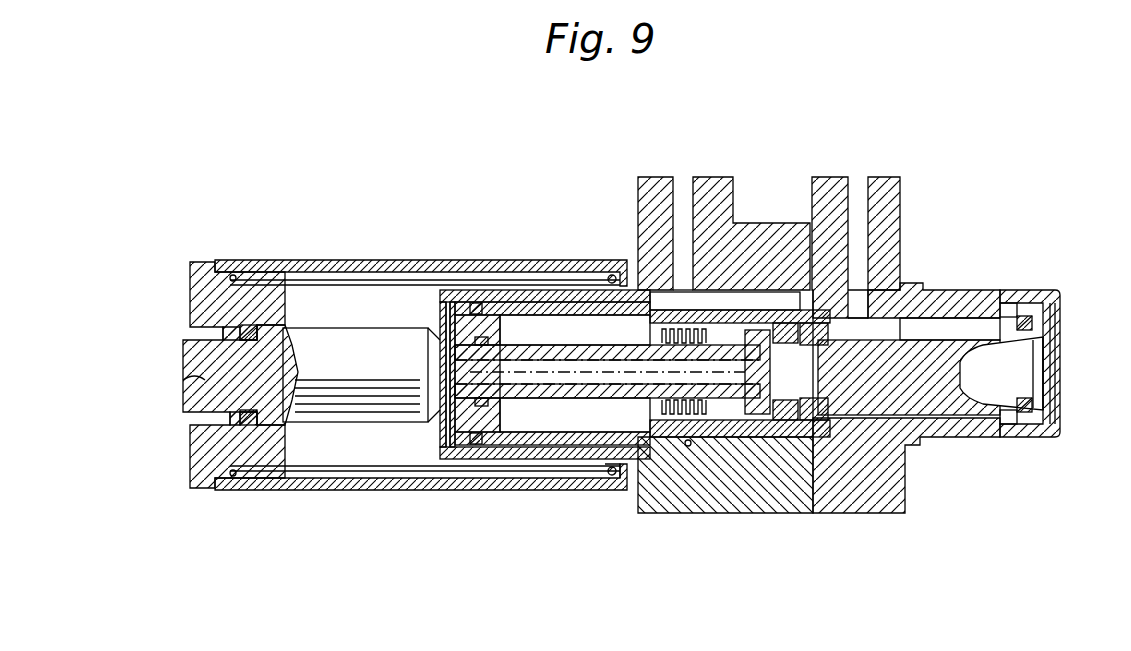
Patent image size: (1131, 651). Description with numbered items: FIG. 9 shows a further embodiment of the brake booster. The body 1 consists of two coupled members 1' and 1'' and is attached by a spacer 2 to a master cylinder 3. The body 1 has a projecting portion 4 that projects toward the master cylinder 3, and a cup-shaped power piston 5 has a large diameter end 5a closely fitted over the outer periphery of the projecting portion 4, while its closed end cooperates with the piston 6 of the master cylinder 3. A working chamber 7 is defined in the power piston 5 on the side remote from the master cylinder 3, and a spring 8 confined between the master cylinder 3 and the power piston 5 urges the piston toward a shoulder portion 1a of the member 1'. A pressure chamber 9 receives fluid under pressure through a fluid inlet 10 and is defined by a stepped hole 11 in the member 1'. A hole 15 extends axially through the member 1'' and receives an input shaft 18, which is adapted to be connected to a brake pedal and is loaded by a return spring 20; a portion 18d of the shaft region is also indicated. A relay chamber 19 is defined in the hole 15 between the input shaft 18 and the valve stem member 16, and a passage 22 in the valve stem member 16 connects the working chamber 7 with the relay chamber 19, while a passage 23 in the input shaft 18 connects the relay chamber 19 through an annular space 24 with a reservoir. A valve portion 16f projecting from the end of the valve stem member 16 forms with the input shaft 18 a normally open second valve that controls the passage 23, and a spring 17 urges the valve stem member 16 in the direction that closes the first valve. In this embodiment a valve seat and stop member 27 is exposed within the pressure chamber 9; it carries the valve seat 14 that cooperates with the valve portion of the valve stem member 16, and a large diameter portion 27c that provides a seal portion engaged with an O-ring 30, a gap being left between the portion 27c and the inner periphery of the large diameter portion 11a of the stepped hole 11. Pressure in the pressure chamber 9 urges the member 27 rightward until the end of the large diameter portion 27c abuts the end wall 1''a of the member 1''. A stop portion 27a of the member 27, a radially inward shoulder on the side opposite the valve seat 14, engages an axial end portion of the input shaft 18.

The body proper 1 is at (822, 263).
The body member 1' is at (825, 220).
The body member 1'' is at (870, 220).
The shoulder portion 1a is at (613, 276).
The end wall 1''a is at (904, 269).
The spacer 2 is at (345, 268).
The master cylinder 3 is at (235, 295).
The projecting portion 4 is at (531, 308).
The power piston 5 is at (493, 305).
The large diameter end 5a is at (432, 332).
The piston 6 is at (205, 403).
The working chamber 7 is at (448, 300).
The spring 8 is at (292, 285).
The pressure chamber 9 is at (567, 320).
The fluid inlet 10 is at (665, 220).
The stepped hole 11 is at (598, 430).
The large diameter portion of stepped hole 11a is at (688, 447).
The valve seat 14 is at (708, 232).
The hole 15 is at (1000, 420).
The valve stem member 16 is at (522, 375).
The valve portion 16f is at (752, 418).
The spring 17 is at (622, 478).
The input shaft 18 is at (952, 420).
The housing flange 18d is at (902, 207).
The relay chamber 19 is at (730, 465).
The return spring 20 is at (790, 422).
The passage 22 is at (485, 440).
The passage 23 is at (820, 366).
The annular space 24 is at (950, 327).
The valve seat and stop member 27 is at (752, 330).
The stop portion 27a is at (770, 300).
The large diameter portion 27c is at (802, 320).
The O-ring 30 is at (880, 345).